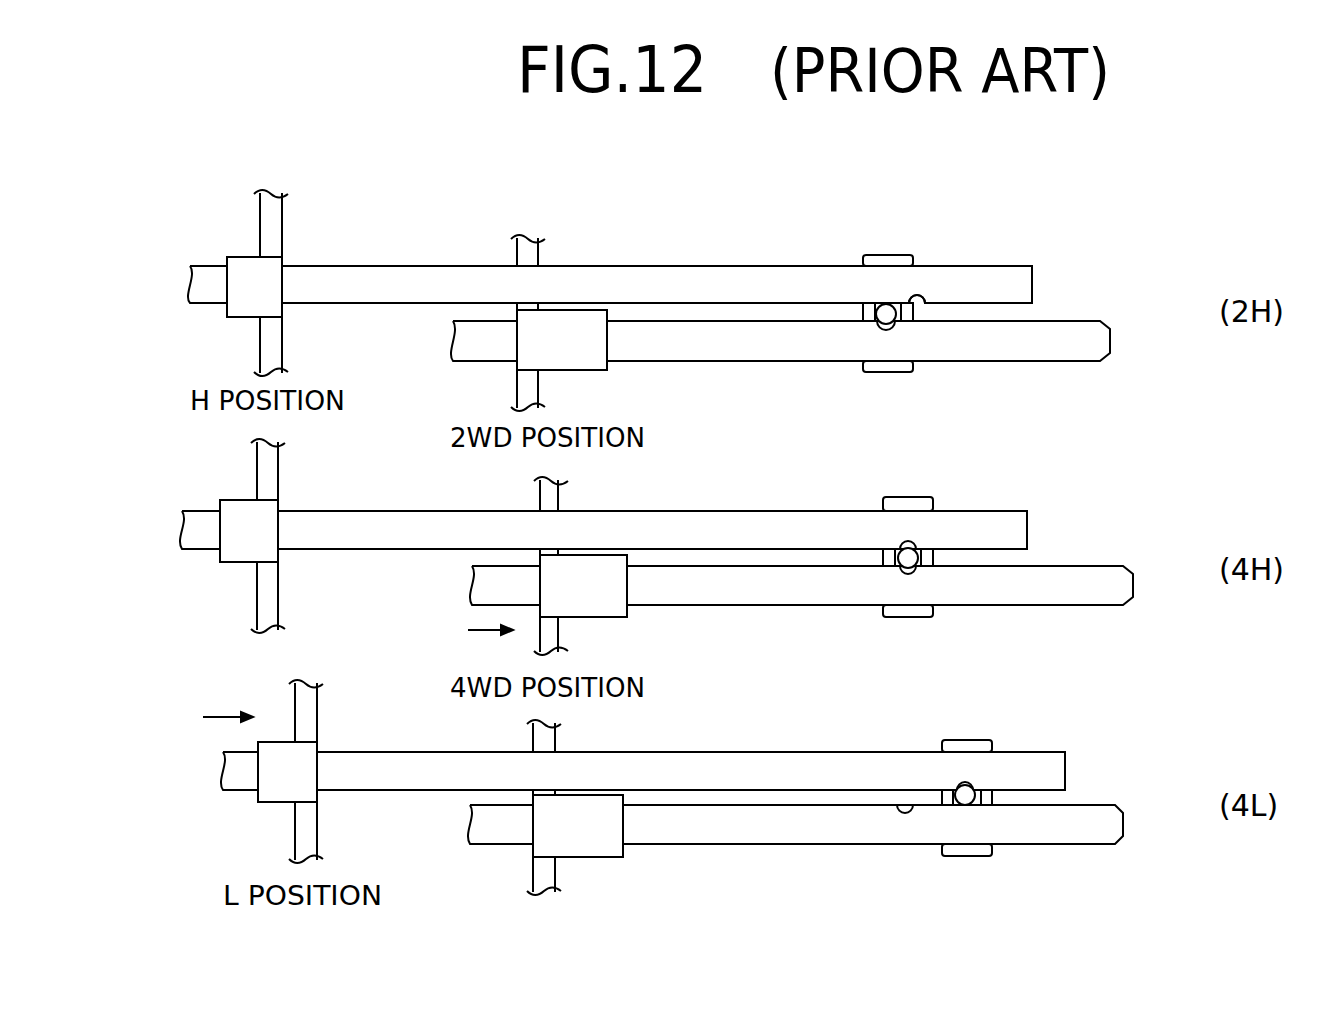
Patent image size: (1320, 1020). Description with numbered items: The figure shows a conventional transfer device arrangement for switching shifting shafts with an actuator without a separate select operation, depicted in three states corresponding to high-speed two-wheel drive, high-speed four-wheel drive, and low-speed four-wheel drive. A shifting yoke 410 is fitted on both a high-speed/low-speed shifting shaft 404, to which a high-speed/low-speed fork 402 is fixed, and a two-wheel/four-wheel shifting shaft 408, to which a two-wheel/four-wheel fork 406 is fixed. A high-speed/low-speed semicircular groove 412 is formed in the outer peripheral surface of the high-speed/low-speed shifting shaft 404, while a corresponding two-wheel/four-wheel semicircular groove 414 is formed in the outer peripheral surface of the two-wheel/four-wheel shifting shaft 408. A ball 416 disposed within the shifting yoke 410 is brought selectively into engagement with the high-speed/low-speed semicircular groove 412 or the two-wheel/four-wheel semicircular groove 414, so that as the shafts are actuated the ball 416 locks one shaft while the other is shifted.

The high-speed/low-speed fork 402 is at (281, 220).
The high-speed/low-speed shifting shaft 404 is at (667, 272).
The two-wheel/four-wheel fork 406 is at (530, 388).
The two-wheel/four-wheel shifting shaft 408 is at (763, 343).
The shifting yoke 410 is at (890, 257).
The high-speed/low-speed semicircular groove 412 is at (927, 305).
The two-wheel/four-wheel semicircular groove 414 is at (893, 322).
The ball 416 is at (880, 305).